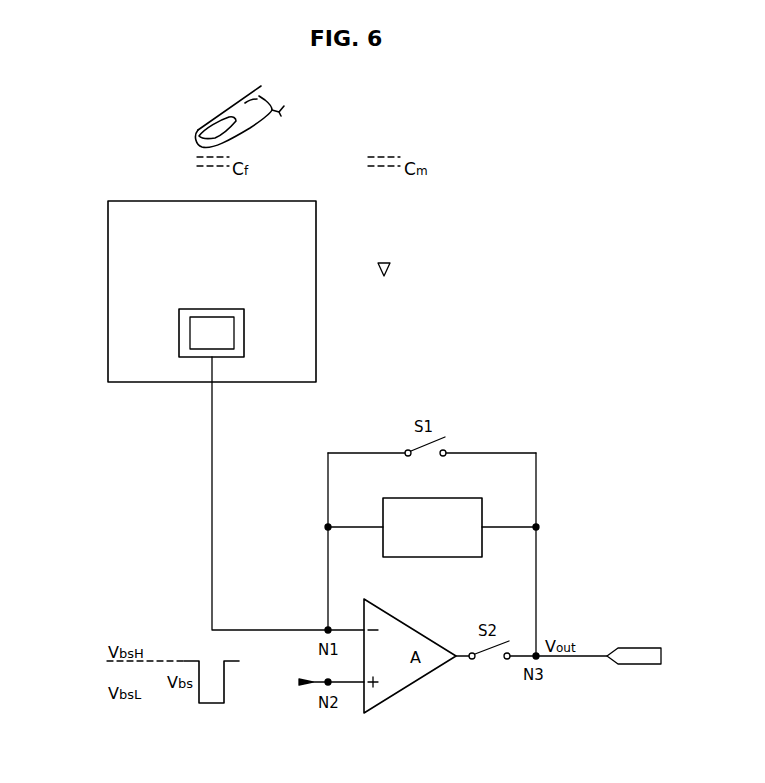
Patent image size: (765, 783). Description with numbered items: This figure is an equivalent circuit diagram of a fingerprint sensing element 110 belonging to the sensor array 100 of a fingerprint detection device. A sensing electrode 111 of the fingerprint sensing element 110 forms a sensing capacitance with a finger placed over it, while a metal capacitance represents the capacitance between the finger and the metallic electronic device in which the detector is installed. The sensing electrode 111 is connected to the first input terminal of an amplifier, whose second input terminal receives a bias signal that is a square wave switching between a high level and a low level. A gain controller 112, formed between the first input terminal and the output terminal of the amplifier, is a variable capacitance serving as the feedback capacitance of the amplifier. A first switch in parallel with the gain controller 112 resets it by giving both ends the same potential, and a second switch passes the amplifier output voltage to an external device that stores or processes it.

The sensor array 100 is at (141, 323).
The fingerprint sensing element 110 is at (247, 322).
The sensing electrode 111 is at (201, 341).
The gain controller 112 is at (483, 499).